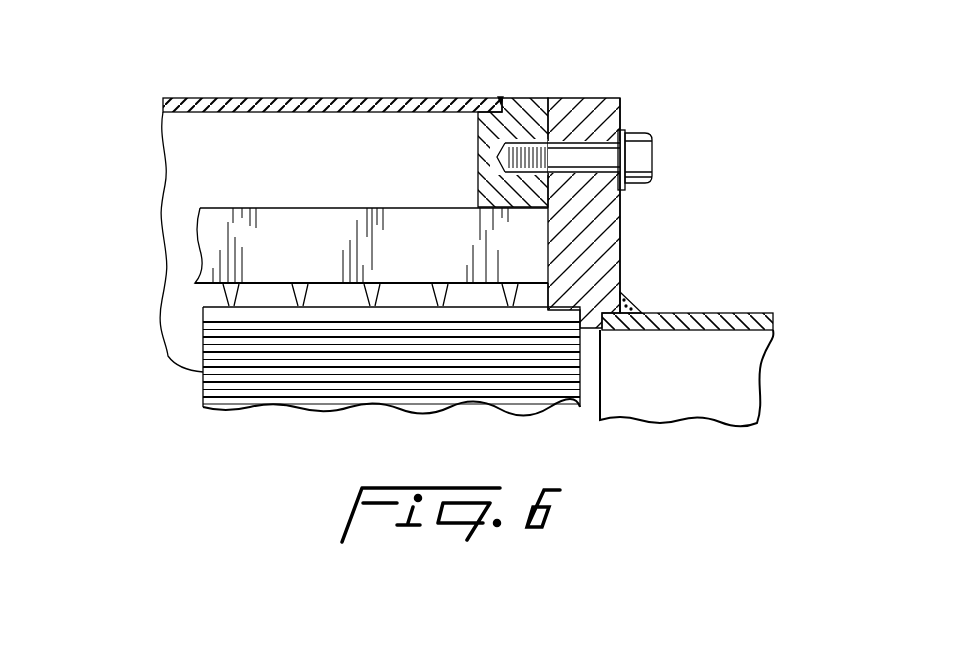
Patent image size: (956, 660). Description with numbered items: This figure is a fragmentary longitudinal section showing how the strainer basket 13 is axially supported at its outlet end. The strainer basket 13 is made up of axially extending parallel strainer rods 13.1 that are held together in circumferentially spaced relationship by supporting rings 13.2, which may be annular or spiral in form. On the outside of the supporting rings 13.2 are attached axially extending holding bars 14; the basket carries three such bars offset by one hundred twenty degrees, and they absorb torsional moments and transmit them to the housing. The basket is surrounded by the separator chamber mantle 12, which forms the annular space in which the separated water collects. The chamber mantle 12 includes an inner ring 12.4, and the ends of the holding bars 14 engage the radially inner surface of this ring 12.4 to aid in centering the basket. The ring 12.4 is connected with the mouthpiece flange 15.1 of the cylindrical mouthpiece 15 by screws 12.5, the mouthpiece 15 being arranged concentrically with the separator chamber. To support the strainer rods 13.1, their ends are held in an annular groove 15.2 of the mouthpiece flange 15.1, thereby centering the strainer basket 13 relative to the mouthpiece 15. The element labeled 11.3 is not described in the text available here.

The separator chamber mantle 12 is at (293, 98).
The ring 12.4 is at (478, 167).
The screws 12.5 is at (653, 143).
The mouthpiece flange 15.1 is at (577, 107).
The bracket 11.3 is at (622, 230).
The annular groove 15.2 is at (560, 307).
The cylindrical mouthpiece 15 is at (737, 313).
The holding bars 14 is at (268, 232).
The supporting rings 13.2 is at (372, 290).
The strainer rods 13.1 is at (218, 315).
The strainer basket 13 is at (278, 409).